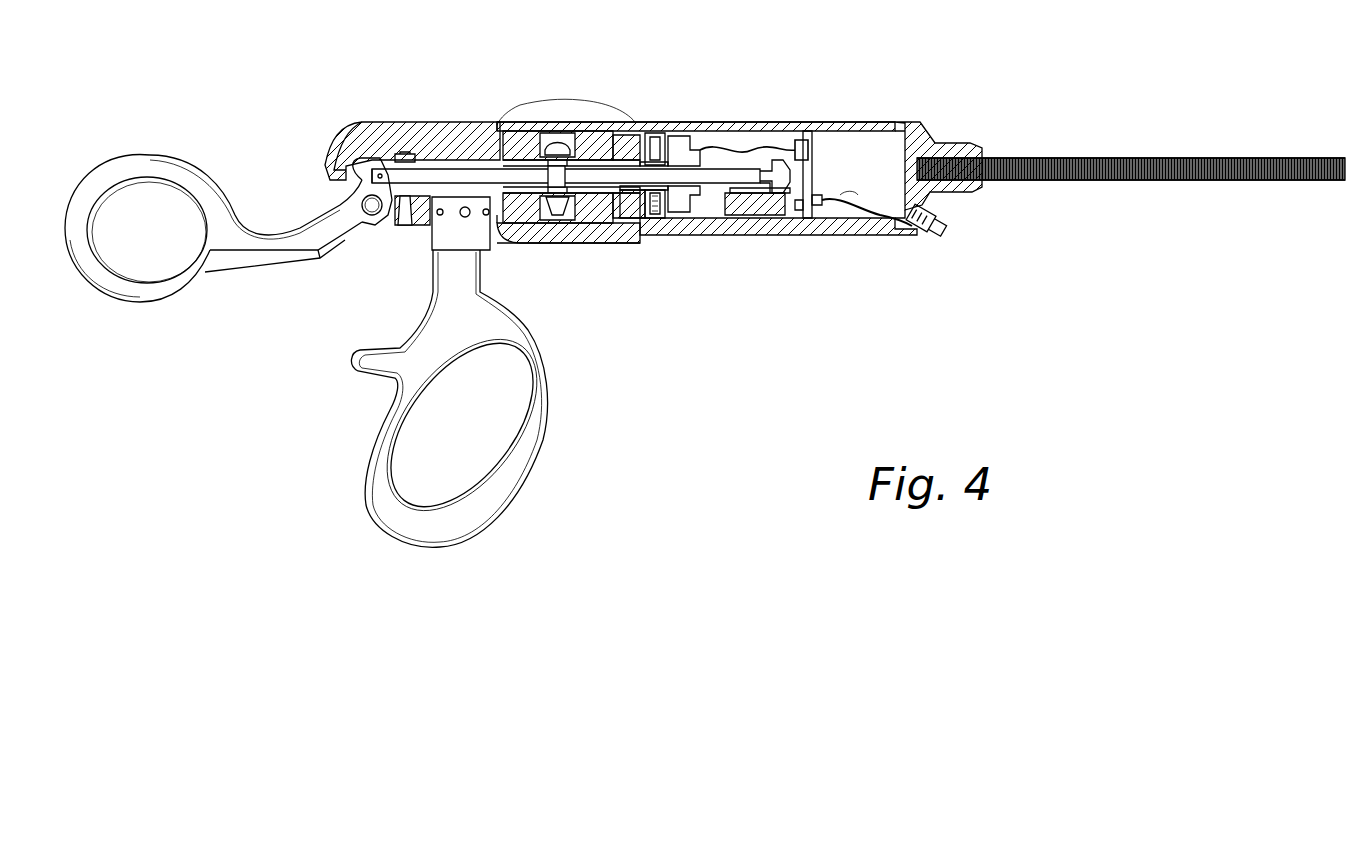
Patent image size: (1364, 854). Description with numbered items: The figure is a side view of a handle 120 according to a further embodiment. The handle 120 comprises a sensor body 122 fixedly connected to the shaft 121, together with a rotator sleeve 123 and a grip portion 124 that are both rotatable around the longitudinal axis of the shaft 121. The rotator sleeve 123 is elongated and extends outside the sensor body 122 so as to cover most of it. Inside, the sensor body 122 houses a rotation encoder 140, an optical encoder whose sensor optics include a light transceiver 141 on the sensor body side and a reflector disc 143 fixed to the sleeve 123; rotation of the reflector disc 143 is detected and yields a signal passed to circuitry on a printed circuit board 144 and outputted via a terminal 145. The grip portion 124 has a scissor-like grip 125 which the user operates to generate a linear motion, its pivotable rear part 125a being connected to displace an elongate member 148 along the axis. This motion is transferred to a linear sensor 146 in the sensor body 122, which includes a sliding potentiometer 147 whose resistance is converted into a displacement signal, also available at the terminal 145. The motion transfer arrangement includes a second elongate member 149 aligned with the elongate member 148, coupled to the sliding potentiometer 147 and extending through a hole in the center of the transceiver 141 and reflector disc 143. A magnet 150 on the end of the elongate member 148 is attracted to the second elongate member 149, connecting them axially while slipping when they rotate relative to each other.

The handle 120 is at (702, 320).
The shaft 121 is at (1163, 159).
The sensor body 122 is at (846, 123).
The rotator sleeve 123 is at (620, 118).
The grip portion 124 is at (394, 123).
The scissor-like grip 125 is at (440, 535).
The rear part of the grip 125a is at (122, 288).
The rotation encoder 140 is at (667, 136).
The light transceiver 141 is at (655, 205).
The reflector disc 143 is at (637, 200).
The printed circuit board 144 is at (815, 205).
The terminal 145 is at (945, 222).
The linear sensor 146 is at (708, 200).
The sliding potentiometer 147 is at (766, 215).
The elongate member 148 is at (488, 125).
The second elongate member 149 is at (680, 183).
The magnet 150 is at (566, 125).